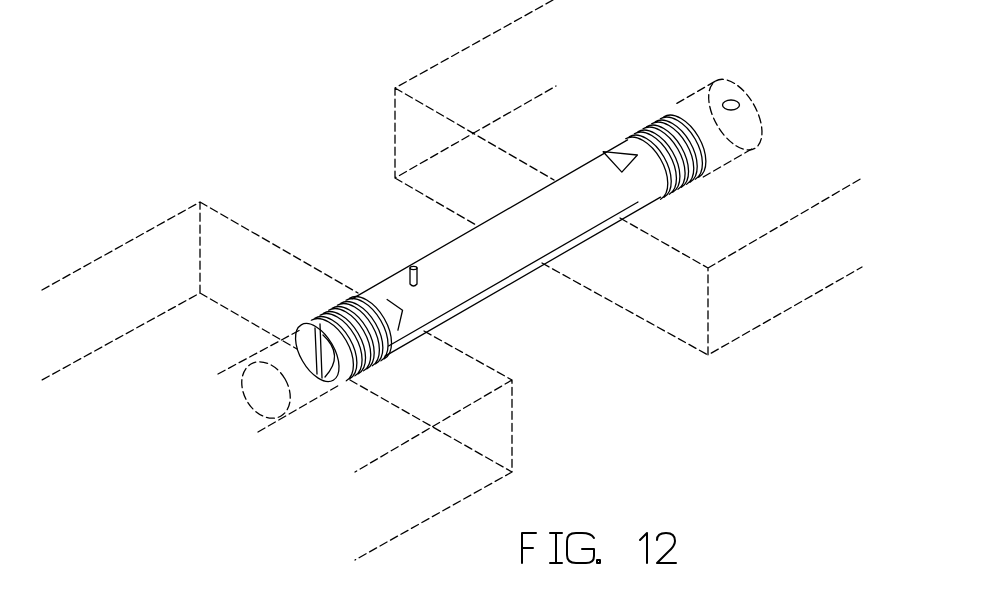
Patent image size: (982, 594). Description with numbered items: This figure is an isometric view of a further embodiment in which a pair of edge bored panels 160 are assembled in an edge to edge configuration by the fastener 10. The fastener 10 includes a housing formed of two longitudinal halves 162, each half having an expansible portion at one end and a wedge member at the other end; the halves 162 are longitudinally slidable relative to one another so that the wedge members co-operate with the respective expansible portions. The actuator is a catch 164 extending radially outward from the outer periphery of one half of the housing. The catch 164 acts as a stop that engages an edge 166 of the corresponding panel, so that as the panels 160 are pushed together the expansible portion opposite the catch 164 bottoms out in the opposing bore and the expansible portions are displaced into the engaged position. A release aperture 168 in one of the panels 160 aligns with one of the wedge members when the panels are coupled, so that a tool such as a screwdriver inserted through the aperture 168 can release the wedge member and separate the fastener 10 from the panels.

The fastener 10 is at (490, 332).
The edge bored panels 160 is at (177, 250).
The longitudinal halves 162 is at (427, 257).
The catch 164 is at (428, 256).
The edge 166 is at (680, 355).
The release aperture 168 is at (723, 100).